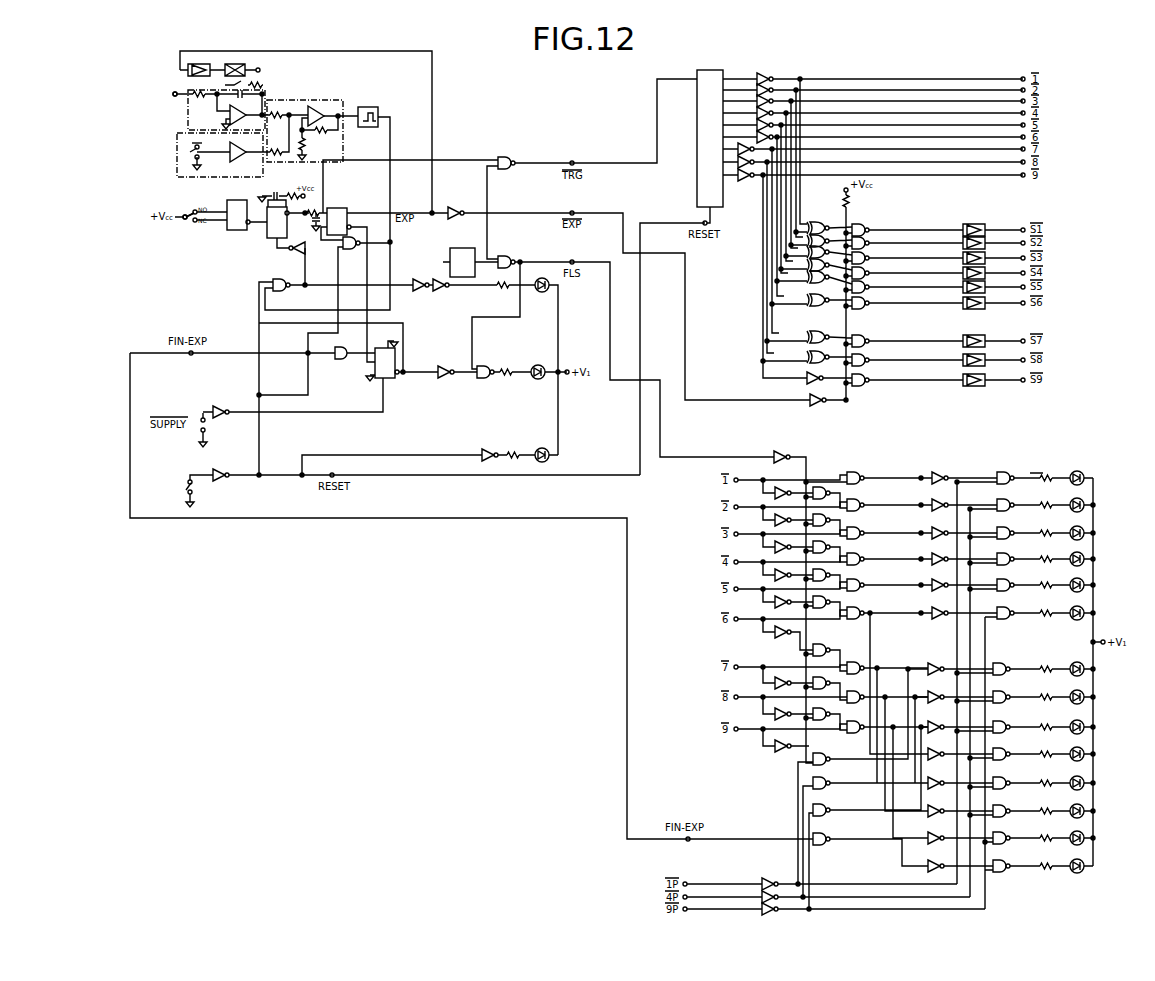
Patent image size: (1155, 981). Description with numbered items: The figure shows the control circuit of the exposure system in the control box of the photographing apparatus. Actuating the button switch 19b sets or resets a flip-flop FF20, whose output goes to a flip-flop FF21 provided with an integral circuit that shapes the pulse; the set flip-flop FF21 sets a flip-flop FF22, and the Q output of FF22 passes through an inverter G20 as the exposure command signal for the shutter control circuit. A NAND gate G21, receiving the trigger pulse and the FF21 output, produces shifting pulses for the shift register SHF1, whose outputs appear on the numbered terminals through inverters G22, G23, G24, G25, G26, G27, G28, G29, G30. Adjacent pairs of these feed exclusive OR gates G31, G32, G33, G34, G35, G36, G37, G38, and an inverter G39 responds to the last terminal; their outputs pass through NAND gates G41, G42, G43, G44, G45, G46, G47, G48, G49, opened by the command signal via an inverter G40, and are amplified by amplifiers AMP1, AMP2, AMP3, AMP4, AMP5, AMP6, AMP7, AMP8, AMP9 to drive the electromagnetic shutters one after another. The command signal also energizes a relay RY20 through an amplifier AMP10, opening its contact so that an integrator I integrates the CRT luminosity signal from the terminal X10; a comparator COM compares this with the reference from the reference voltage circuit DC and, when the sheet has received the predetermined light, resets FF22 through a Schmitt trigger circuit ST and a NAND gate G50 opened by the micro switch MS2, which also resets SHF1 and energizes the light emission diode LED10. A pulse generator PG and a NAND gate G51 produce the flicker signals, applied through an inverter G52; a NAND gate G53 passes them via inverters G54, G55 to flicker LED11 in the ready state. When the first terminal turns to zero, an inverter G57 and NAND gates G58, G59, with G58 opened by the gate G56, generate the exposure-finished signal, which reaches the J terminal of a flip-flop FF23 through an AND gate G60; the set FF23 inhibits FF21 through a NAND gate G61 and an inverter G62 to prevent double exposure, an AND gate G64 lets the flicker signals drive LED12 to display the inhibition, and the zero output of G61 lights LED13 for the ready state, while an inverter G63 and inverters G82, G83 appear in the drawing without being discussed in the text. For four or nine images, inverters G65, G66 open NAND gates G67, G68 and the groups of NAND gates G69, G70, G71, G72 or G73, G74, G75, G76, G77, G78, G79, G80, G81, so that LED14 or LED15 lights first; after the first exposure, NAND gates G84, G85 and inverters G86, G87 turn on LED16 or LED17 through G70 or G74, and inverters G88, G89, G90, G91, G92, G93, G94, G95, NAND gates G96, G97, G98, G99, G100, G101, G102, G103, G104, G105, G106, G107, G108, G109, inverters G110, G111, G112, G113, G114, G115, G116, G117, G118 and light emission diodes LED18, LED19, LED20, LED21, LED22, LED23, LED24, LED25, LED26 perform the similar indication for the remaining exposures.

The amplifier AMP10 is at (205, 62).
The relay RY20 is at (244, 62).
The terminal X10 is at (163, 94).
The integrator I is at (185, 125).
The reference voltage circuit DC is at (177, 166).
The comparator COM is at (303, 95).
The Schmitt trigger circuit ST is at (368, 109).
The button switch 19b is at (186, 221).
The flip-flop FF20 is at (238, 223).
The flip-flop FF21 is at (270, 231).
The flip-flop FF22 is at (345, 213).
The flip-flop FF23 is at (397, 370).
The inverter G20 is at (452, 220).
The NAND gate G21 is at (512, 170).
The NAND gate G50 is at (346, 249).
The NAND gate G51 is at (508, 268).
The AND gate G60 is at (342, 359).
The NAND gate G61 is at (288, 291).
The inverter G62 is at (297, 253).
The inverter G63 is at (446, 378).
The AND gate G64 is at (485, 378).
The pulse generator PG is at (451, 262).
The light emission diode LED10 is at (540, 448).
The light emission diode LED12 is at (536, 378).
The light emission diode LED13 is at (541, 290).
The micro switch MS2 is at (213, 481).
The shift register SHF1 is at (718, 70).
The inverter G22 is at (770, 73).
The inverter G23 is at (780, 82).
The inverter G24 is at (800, 101).
The inverter G25 is at (800, 113).
The inverter G26 is at (800, 125).
The inverter G27 is at (800, 137).
The inverter G28 is at (800, 149).
The inverter G29 is at (800, 162).
The inverter G30 is at (800, 175).
The exclusive OR gate G31 is at (823, 222).
The exclusive OR gate G32 is at (824, 237).
The exclusive OR gate G33 is at (824, 249).
The exclusive OR gate G34 is at (824, 262).
The exclusive OR gate G35 is at (824, 274).
The exclusive OR gate G36 is at (824, 297).
The exclusive OR gate G37 is at (823, 331).
The exclusive OR gate G38 is at (823, 352).
The inverter G39 is at (823, 373).
The inverter G40 is at (825, 395).
The NAND gate G41 is at (872, 225).
The NAND gate G42 is at (872, 239).
The NAND gate G43 is at (872, 254).
The NAND gate G44 is at (872, 269).
The NAND gate G45 is at (872, 283).
The NAND gate G46 is at (872, 299).
The NAND gate G47 is at (872, 336).
The NAND gate G48 is at (872, 355).
The NAND gate G49 is at (872, 375).
The amplifier AMP1 is at (988, 225).
The amplifier AMP2 is at (989, 240).
The amplifier AMP3 is at (989, 255).
The amplifier AMP4 is at (989, 270).
The amplifier AMP5 is at (989, 284).
The amplifier AMP6 is at (989, 300).
The amplifier AMP7 is at (989, 337).
The amplifier AMP8 is at (989, 356).
The amplifier AMP9 is at (989, 376).
The inverter G52 is at (787, 450).
The NAND gate G53 is at (858, 472).
The inverter G54 is at (943, 471).
The inverter G55 is at (1008, 471).
The gate G56 is at (770, 877).
The inverter G57 is at (787, 497).
The NAND gate G58 is at (825, 753).
The NAND gate G59 is at (825, 833).
The inverter G65 is at (781, 893).
The inverter G66 is at (775, 914).
The NAND gate G67 is at (825, 777).
The NAND gate G68 is at (825, 804).
The NAND gate G69 is at (1010, 511).
The NAND gate G70 is at (1010, 539).
The NAND gate G71 is at (1010, 565).
The NAND gate G72 is at (1010, 591).
The NAND gate G73 is at (1007, 619).
The NAND gate G74 is at (1004, 662).
The NAND gate G75 is at (1004, 690).
The NAND gate G76 is at (1004, 720).
The NAND gate G77 is at (1004, 747).
The NAND gate G78 is at (1004, 776).
The NAND gate G79 is at (1004, 804).
The NAND gate G80 is at (1004, 831).
The NAND gate G81 is at (1004, 859).
The inverter G82 is at (942, 510).
The inverter G83 is at (942, 618).
The NAND gate G84 is at (825, 498).
The NAND gate G85 is at (864, 509).
The inverter G86 is at (942, 538).
The inverter G87 is at (938, 662).
The inverter G88 is at (787, 524).
The inverter G89 is at (787, 551).
The inverter G90 is at (787, 579).
The inverter G91 is at (787, 606).
The inverter G92 is at (787, 636).
The inverter G93 is at (787, 677).
The inverter G94 is at (787, 708).
The inverter G95 is at (787, 740).
The NAND gate G96 is at (825, 525).
The NAND gate G97 is at (864, 537).
The NAND gate G98 is at (825, 552).
The NAND gate G99 is at (864, 563).
The NAND gate G100 is at (827, 580).
The NAND gate G101 is at (866, 590).
The NAND gate G102 is at (827, 607).
The NAND gate G103 is at (859, 619).
The NAND gate G104 is at (827, 655).
The NAND gate G105 is at (862, 673).
The NAND gate G106 is at (827, 688).
The NAND gate G107 is at (862, 702).
The NAND gate G108 is at (827, 719).
The NAND gate G109 is at (862, 732).
The inverter G110 is at (943, 564).
The inverter G111 is at (943, 590).
The inverter G112 is at (941, 690).
The inverter G113 is at (941, 720).
The inverter G114 is at (941, 747).
The inverter G115 is at (941, 776).
The inverter G116 is at (941, 804).
The inverter G117 is at (941, 831).
The inverter G118 is at (941, 859).
The light emission diode LED11 is at (1074, 471).
The light emission diode LED14 is at (1071, 498).
The light emission diode LED15 is at (1071, 606).
The light emission diode LED16 is at (1071, 526).
The light emission diode LED17 is at (1071, 662).
The light emission diode LED18 is at (1071, 552).
The light emission diode LED19 is at (1071, 578).
The light emission diode LED20 is at (1071, 690).
The light emission diode LED21 is at (1071, 720).
The light emission diode LED22 is at (1071, 747).
The light emission diode LED23 is at (1071, 776).
The light emission diode LED24 is at (1071, 804).
The light emission diode LED25 is at (1071, 831).
The light emission diode LED26 is at (1071, 859).